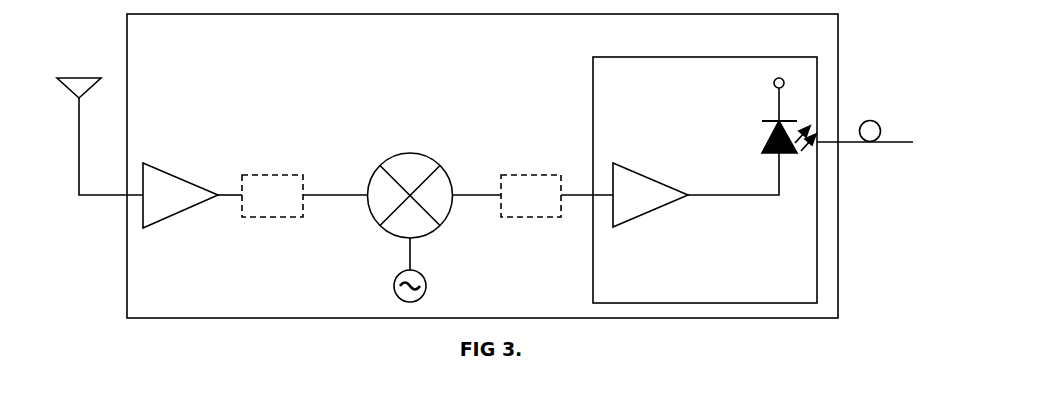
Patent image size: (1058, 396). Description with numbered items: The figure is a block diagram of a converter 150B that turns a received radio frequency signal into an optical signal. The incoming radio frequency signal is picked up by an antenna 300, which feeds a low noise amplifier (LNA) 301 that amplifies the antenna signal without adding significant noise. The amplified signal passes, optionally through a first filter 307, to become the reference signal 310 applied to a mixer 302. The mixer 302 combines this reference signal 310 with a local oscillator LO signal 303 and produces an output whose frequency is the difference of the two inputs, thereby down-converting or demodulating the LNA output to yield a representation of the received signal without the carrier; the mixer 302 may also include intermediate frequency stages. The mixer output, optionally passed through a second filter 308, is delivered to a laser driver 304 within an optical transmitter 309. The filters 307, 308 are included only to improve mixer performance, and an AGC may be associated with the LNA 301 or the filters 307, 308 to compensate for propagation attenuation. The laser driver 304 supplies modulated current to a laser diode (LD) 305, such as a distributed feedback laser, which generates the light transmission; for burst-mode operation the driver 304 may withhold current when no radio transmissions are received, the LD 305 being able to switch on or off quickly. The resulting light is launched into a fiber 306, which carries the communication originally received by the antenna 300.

The converter 150B is at (461, 40).
The antenna 300 is at (93, 107).
The low noise amplifier (LNA) 301 is at (192, 204).
The mixer 302 is at (435, 183).
The local oscillator (LO) signal 303 is at (406, 270).
The laser driver 304 is at (696, 199).
The laser diode (LD) 305 is at (771, 115).
The fiber 306 is at (865, 133).
The filter 307 is at (272, 210).
The filter 308 is at (557, 211).
The optical transmitter 309 is at (705, 169).
The reference signal 310 is at (335, 181).